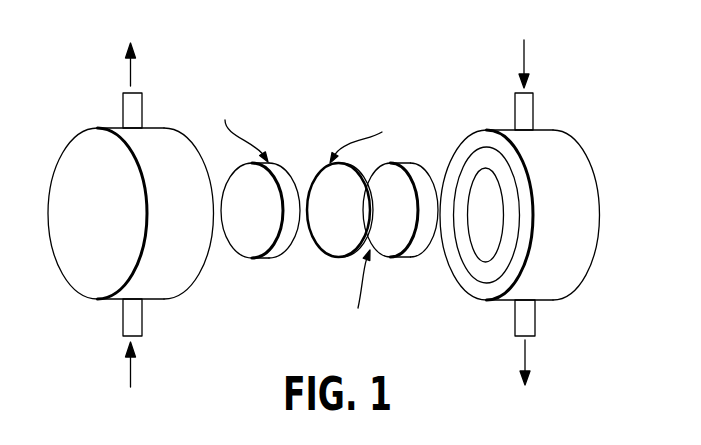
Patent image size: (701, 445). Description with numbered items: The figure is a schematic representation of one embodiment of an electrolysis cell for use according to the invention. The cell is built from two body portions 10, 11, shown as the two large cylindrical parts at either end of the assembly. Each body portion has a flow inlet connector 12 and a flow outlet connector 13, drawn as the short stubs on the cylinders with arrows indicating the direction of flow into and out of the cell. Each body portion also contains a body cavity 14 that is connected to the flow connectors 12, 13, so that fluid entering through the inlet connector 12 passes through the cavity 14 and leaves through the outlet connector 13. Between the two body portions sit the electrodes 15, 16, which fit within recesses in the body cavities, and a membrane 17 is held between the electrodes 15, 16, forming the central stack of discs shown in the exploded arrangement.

The body portion 10 is at (78, 252).
The body portion 11 is at (555, 253).
The flow inlet connector 12 is at (135, 312).
The flow outlet connector 13 is at (135, 108).
The body cavity 14 is at (482, 247).
The electrode 15 is at (255, 235).
The electrode 16 is at (400, 232).
The membrane 17 is at (330, 223).